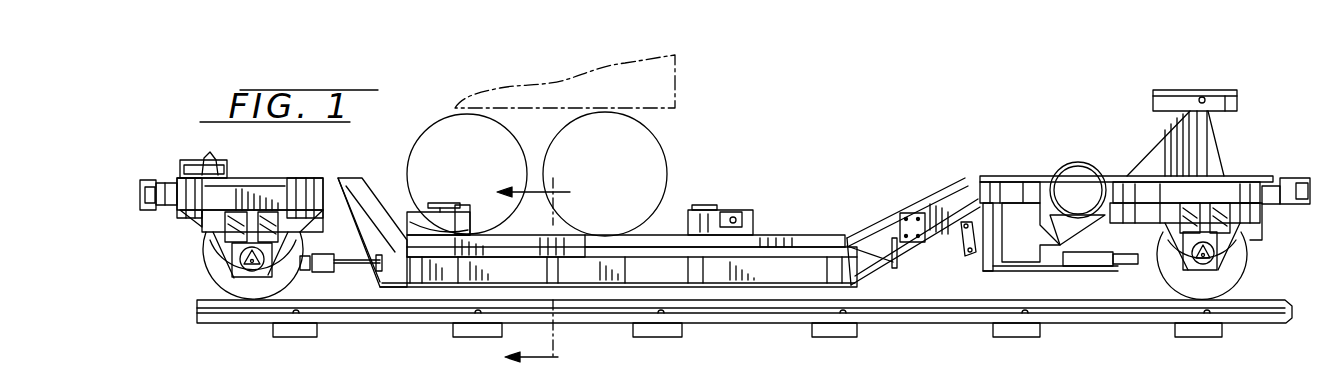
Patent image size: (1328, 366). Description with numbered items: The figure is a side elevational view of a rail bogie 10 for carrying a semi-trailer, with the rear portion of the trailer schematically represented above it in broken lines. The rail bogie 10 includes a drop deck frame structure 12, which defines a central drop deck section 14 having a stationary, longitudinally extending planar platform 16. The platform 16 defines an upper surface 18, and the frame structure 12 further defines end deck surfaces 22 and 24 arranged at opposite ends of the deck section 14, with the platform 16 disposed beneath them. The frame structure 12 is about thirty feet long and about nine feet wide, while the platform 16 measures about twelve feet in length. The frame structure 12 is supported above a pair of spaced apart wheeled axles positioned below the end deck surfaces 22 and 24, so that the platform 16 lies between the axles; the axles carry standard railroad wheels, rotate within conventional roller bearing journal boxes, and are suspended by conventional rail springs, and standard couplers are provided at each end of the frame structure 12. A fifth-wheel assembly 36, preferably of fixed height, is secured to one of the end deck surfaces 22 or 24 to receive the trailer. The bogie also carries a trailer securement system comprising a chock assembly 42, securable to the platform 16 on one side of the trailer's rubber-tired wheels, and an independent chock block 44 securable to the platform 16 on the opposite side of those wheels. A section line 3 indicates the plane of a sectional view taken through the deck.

The section line 3- 3 is at (535, 266).
The rail bogie 10 is at (1013, 102).
The drop deck frame structure 12 is at (338, 176).
The central drop deck section 14 is at (798, 232).
The planar platform 16 is at (767, 236).
The upper surface 18 is at (660, 228).
The end deck surface 22 is at (1015, 177).
The end deck surface 24 is at (246, 177).
The fifth-wheel assembly 36 is at (1173, 91).
The chock assembly 42 is at (711, 204).
The chock block 44 is at (397, 220).